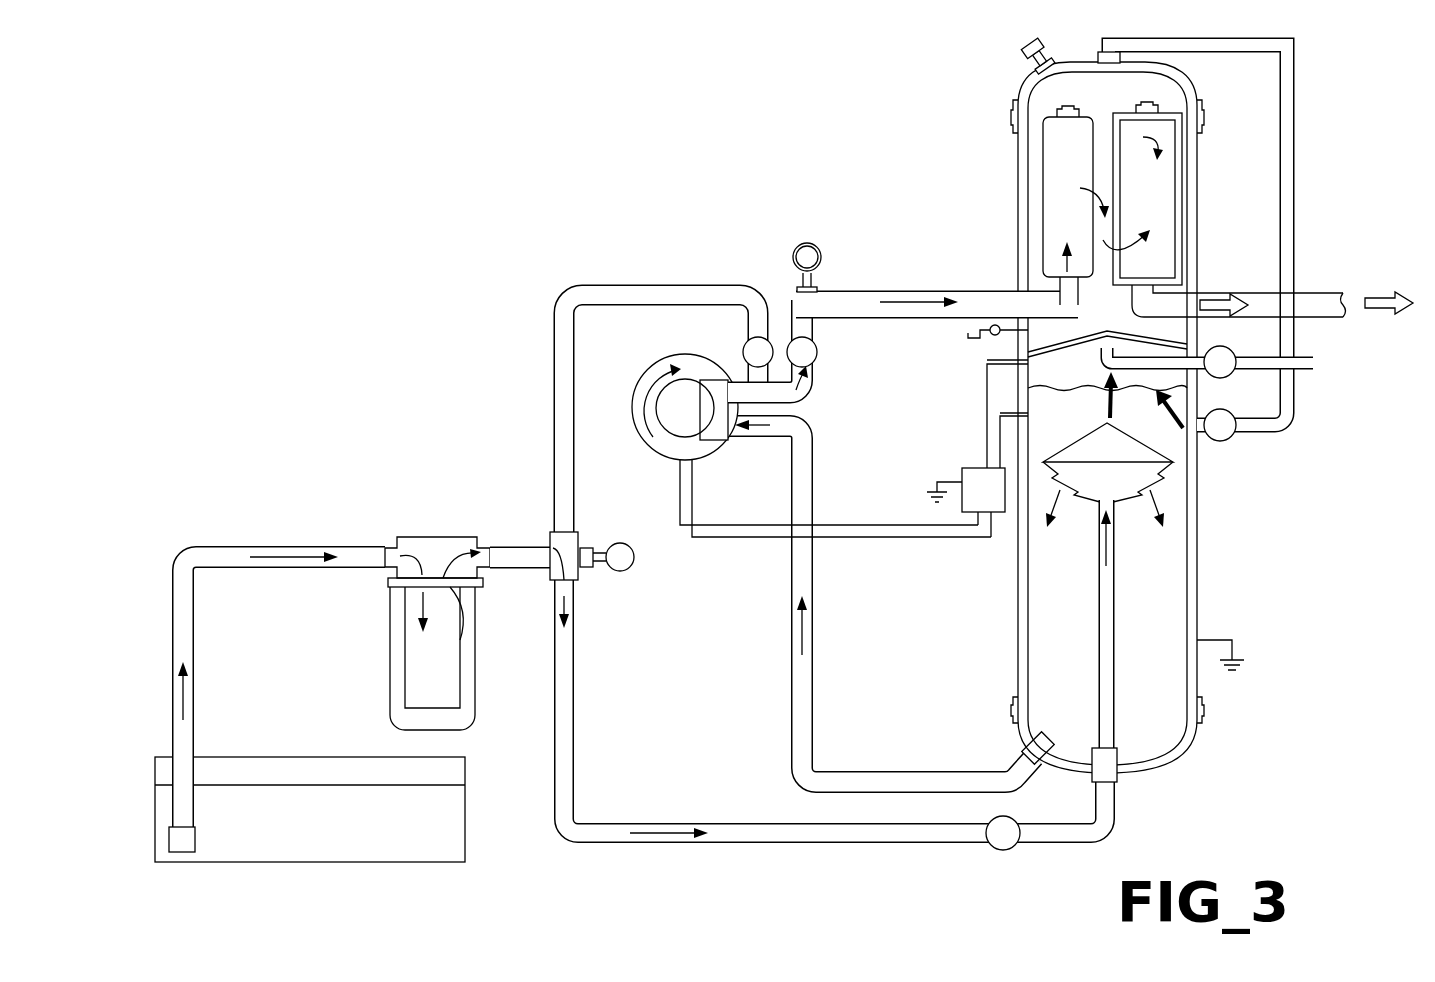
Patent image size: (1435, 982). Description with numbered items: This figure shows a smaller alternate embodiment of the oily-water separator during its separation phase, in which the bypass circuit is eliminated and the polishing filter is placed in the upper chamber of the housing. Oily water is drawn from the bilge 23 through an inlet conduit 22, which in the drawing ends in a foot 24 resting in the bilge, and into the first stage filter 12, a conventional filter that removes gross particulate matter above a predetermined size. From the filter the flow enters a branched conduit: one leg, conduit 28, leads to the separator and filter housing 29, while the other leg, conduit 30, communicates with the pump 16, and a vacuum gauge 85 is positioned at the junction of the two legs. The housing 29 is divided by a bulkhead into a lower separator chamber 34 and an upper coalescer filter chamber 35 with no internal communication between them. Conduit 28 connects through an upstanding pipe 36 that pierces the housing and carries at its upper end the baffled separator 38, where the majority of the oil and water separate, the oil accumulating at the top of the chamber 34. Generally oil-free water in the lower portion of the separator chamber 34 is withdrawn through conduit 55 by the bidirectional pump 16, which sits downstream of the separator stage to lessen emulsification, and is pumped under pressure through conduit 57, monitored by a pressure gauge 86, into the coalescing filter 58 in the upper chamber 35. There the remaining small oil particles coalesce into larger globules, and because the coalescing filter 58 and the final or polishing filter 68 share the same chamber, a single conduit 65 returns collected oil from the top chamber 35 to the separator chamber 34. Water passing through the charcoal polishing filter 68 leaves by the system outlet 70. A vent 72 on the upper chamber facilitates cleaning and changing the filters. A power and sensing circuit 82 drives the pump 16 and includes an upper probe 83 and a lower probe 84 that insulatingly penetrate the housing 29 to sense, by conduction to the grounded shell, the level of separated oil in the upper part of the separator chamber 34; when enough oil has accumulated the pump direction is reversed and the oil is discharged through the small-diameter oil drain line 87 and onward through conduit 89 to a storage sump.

The first stage filter 12 is at (443, 525).
The pump 16 is at (632, 412).
The conduit 22 is at (312, 548).
The bilge 23 is at (466, 840).
The inlet foot/strainer 24 is at (195, 846).
The conduit 28 is at (580, 782).
The separator and filter housing 29 is at (1197, 620).
The conduit 30 is at (633, 295).
The separator chamber 34 is at (1063, 653).
The coalescer filter chamber 35 is at (1118, 105).
The upstanding pipe 36 is at (1114, 668).
The baffled separator 38 is at (1093, 495).
The conduit 55 is at (1063, 710).
The conduit 57 is at (942, 292).
The coalescing filter 58 is at (1076, 205).
The conduit 65 is at (1294, 212).
The polishing filter 68 is at (1142, 193).
The system outlet 70 is at (1313, 293).
The vent 72 is at (1028, 46).
The power and sensing circuit 82 is at (962, 510).
The upper probe 83 is at (987, 363).
The lower probe 84 is at (1000, 413).
The vacuum gauge 85 is at (622, 572).
The pressure gauge 86 is at (820, 252).
The oil drain line 87 is at (1103, 352).
The conduit 89 is at (1305, 372).